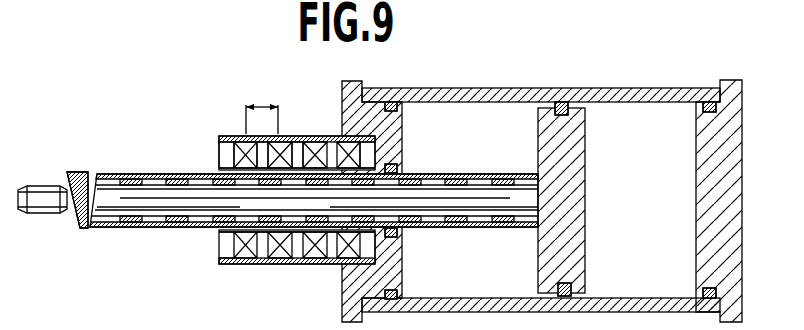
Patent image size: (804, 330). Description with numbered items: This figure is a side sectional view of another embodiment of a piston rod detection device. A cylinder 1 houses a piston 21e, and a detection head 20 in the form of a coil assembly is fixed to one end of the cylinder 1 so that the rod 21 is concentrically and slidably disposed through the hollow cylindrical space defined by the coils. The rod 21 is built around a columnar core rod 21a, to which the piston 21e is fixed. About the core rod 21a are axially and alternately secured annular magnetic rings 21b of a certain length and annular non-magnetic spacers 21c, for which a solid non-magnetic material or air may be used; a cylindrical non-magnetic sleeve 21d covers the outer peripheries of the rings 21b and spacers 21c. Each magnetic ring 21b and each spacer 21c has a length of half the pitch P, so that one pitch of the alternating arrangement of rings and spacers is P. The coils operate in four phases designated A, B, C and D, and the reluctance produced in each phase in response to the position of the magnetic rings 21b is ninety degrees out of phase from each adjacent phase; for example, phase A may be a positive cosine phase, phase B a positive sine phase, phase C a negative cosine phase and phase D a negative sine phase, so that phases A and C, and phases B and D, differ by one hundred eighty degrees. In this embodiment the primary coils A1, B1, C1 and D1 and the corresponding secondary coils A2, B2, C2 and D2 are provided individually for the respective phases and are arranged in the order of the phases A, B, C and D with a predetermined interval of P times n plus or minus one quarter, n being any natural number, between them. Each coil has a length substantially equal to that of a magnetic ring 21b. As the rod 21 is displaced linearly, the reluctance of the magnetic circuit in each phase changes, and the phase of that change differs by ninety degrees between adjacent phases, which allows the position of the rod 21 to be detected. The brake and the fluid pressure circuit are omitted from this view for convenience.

The cylinder 1 is at (617, 90).
The detection head 20 is at (220, 126).
The rod 21 is at (334, 203).
The core rod 21a is at (433, 205).
The magnetic ring 21b is at (138, 230).
The non-magnetic spacer 21c is at (120, 230).
The non-magnetic sleeve 21d is at (110, 230).
The piston 21e is at (578, 195).
The phase A is at (238, 262).
The phase B is at (274, 262).
The phase C is at (309, 262).
The phase D is at (351, 262).
The primary coil of phase A A1 is at (232, 143).
The secondary coil of phase A A2 is at (232, 153).
The primary coil of phase B B1 is at (280, 143).
The secondary coil of phase B B2 is at (275, 168).
The primary coil of phase C C1 is at (312, 143).
The secondary coil of phase C C2 is at (317, 166).
The primary coil of phase D D1 is at (362, 145).
The secondary coil of phase D D2 is at (362, 162).
The pitch P is at (262, 105).